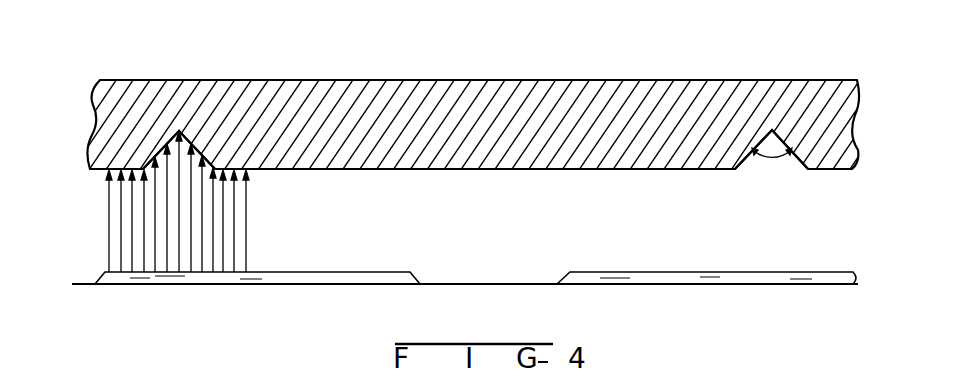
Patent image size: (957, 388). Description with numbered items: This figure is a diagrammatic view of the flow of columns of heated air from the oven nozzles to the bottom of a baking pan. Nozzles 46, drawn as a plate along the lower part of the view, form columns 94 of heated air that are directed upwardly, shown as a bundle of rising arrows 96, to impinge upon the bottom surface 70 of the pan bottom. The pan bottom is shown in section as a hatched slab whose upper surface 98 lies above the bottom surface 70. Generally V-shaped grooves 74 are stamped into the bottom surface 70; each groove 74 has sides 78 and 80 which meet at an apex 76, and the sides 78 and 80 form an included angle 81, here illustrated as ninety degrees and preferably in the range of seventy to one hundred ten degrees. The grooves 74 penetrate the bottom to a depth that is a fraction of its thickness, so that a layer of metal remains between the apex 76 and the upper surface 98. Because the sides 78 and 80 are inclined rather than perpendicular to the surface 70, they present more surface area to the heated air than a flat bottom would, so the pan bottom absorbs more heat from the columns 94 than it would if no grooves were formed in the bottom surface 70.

The nozzles 46 is at (300, 272).
The bottom surface 70 is at (492, 170).
The grooves 74 is at (213, 146).
The apex 76 is at (178, 128).
The side 78 is at (152, 160).
The side 80 is at (204, 146).
The included angle 81 is at (770, 160).
The columns 94 is at (98, 245).
The light rays 96 is at (247, 222).
The upper surface 98 is at (594, 80).